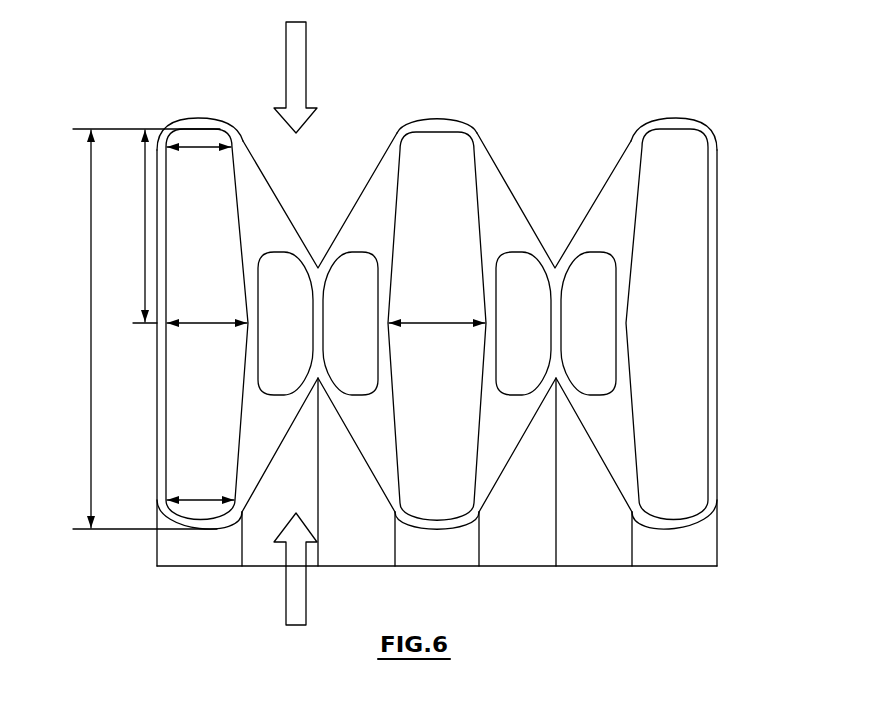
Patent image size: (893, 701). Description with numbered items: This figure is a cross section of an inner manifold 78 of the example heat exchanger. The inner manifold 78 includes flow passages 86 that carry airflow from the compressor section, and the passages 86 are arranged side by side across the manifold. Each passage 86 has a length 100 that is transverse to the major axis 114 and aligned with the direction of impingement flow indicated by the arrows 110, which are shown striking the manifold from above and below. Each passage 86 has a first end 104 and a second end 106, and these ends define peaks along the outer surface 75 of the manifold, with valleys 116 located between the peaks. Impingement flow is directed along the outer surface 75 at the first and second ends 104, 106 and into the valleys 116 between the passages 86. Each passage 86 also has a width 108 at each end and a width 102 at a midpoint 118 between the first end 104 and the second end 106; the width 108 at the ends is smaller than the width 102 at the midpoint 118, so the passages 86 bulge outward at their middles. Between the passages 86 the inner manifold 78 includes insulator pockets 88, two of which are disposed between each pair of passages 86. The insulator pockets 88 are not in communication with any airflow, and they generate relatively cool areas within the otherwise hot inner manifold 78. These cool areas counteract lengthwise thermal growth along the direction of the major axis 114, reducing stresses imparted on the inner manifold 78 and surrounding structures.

The outer surface 75 is at (251, 146).
The inner manifold 78 is at (718, 82).
The flow passages 86 is at (223, 217).
The insulator pockets 88 is at (333, 355).
The length 100 is at (91, 313).
The width at midpoint 102 is at (190, 333).
The first end 104 is at (217, 122).
The second end 106 is at (200, 532).
The width at ends 108 is at (178, 149).
The arrows indicating impingement flow 110 is at (306, 53).
The major axis 114 is at (438, 312).
The valleys 116 is at (323, 217).
The midpoint 118 is at (147, 330).